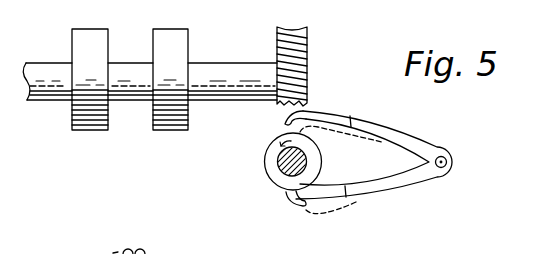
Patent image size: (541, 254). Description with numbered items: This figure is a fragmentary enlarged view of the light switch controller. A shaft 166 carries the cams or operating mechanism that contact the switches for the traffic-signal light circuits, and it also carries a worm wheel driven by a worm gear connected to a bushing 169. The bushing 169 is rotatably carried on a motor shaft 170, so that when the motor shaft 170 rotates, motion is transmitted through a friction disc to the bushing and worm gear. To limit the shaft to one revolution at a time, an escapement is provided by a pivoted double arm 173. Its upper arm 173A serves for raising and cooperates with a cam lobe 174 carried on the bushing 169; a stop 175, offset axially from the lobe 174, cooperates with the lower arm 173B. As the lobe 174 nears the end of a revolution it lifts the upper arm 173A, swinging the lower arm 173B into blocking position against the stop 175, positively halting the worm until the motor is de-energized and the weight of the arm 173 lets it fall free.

The shaft 166 is at (56, 43).
The bushing 169 is at (321, 160).
The motor shaft 170 is at (279, 158).
The pivoted double arm 173 is at (420, 140).
The upper arm 173A is at (339, 115).
The lower arm 173B is at (335, 197).
The cam lobe 174 is at (289, 124).
The stop 175 is at (302, 207).